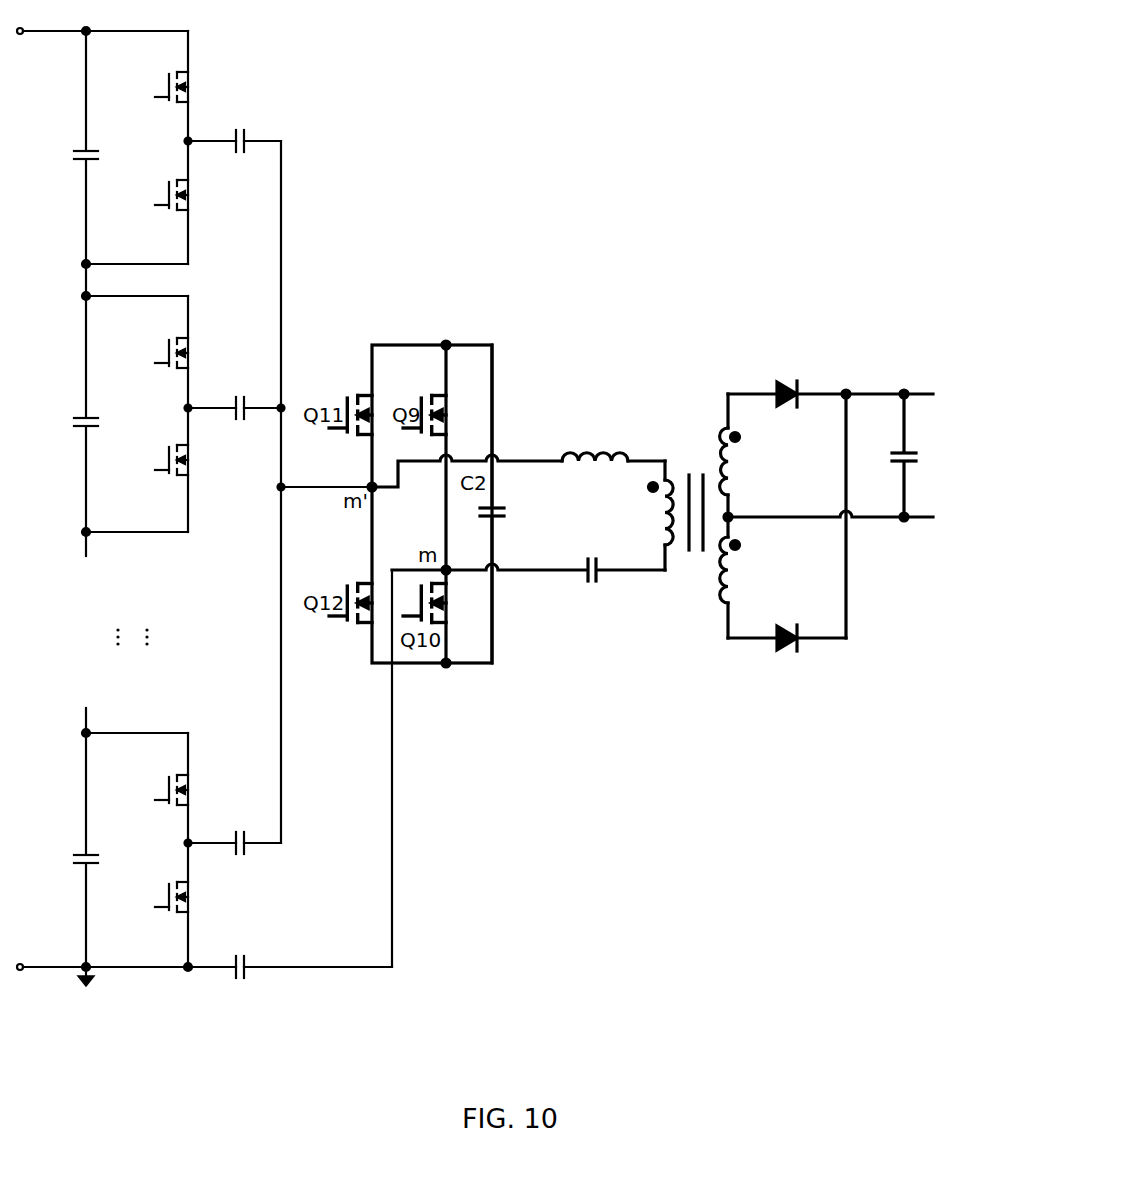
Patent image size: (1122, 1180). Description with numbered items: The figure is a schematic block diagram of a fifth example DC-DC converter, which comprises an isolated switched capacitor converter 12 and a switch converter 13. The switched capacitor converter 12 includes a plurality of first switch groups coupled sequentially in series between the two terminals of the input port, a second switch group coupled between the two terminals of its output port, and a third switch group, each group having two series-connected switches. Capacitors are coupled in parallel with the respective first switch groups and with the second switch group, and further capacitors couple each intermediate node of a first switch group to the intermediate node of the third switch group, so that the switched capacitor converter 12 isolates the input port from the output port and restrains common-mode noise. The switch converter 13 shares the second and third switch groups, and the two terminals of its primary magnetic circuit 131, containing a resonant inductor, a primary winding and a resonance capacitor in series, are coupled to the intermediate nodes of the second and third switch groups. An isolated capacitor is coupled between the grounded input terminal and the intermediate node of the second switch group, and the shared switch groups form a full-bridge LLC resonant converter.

The isolated switched capacitor converter 12 is at (347, 240).
The switch converter 13 is at (658, 421).
The primary magnetic circuit 131 is at (630, 628).